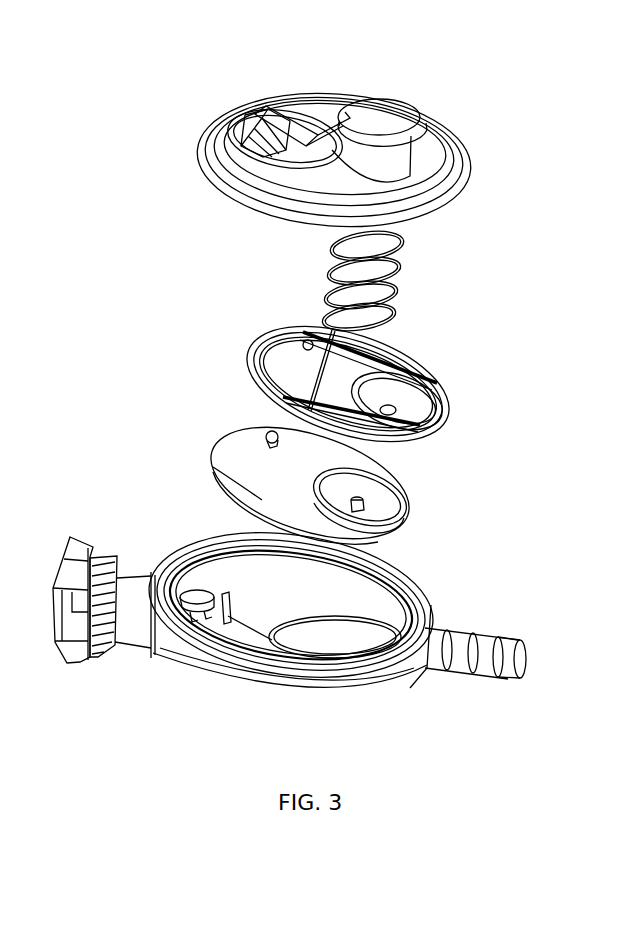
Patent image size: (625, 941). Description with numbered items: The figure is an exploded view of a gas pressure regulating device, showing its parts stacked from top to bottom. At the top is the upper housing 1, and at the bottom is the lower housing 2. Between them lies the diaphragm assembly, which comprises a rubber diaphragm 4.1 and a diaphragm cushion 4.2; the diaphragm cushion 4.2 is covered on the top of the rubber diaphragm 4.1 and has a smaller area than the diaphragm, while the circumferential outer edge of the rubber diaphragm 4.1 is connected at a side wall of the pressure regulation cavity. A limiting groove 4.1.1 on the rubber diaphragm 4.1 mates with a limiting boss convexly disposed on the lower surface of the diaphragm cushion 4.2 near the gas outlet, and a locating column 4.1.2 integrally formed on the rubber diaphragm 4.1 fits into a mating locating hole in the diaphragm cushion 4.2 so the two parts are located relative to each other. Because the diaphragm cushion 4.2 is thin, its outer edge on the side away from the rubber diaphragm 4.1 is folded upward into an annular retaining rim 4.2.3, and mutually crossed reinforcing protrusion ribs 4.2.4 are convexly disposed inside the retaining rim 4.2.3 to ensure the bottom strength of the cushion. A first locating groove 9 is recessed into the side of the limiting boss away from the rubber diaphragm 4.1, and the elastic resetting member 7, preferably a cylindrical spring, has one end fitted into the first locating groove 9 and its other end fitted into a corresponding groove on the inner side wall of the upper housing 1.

The upper housing 1 is at (318, 117).
The lower housing 2 is at (170, 645).
The rubber diaphragm 4.1 is at (340, 485).
The limiting groove 4.1.1 is at (385, 497).
The locating column 4.1.2 is at (268, 430).
The diaphragm cushion 4.2 is at (346, 373).
The retaining rim 4.2.3 is at (283, 327).
The reinforcing protrusion rib 4.2.4 is at (392, 358).
The elastic resetting member 7 is at (405, 265).
The first locating groove 9 is at (440, 392).